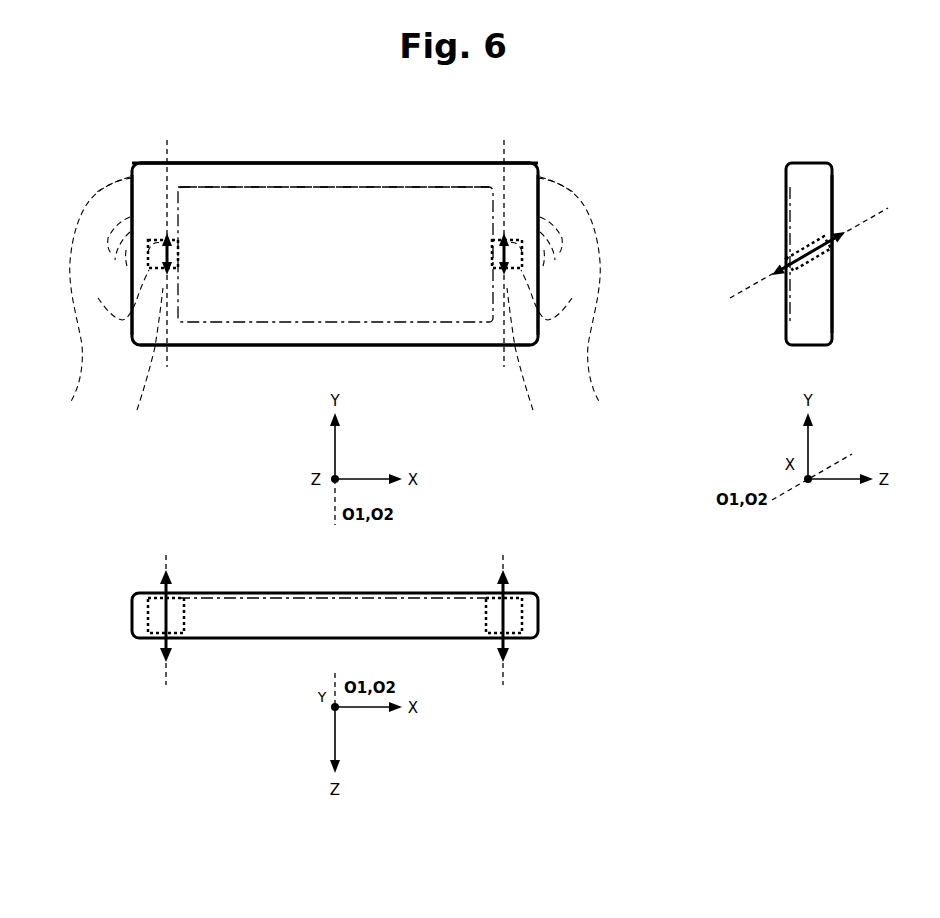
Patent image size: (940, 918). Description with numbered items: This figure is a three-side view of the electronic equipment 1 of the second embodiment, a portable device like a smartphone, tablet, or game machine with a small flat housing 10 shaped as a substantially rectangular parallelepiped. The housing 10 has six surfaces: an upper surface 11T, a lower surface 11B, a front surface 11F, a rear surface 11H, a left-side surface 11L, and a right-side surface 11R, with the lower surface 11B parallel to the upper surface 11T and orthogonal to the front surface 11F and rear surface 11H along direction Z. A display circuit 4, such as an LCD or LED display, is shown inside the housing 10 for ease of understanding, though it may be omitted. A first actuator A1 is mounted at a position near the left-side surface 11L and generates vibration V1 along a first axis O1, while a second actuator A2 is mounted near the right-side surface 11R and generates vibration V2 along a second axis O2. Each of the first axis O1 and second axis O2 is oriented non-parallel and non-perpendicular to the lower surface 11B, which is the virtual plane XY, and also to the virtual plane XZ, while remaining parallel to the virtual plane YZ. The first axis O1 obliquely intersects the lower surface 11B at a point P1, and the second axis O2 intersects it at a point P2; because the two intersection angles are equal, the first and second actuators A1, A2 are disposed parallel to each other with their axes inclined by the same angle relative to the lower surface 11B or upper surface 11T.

The electronic equipment 1 is at (130, 140).
The housing 10 is at (522, 163).
The display circuit 4 is at (245, 322).
The upper surface 11T is at (313, 187).
The front surface 11F is at (381, 163).
The rear surface 11H is at (381, 345).
The lower surface 11B is at (832, 324).
The left-side surface 11L is at (131, 197).
The right-side surface 11R is at (539, 197).
The first axis O1 is at (166, 402).
The second axis O2 is at (689, 402).
The vibration V1 is at (175, 254).
The vibration V2 is at (657, 262).
The first actuator A1 is at (180, 605).
The second actuator A2 is at (487, 605).
The point P1 is at (830, 253).
The point P2 is at (830, 253).